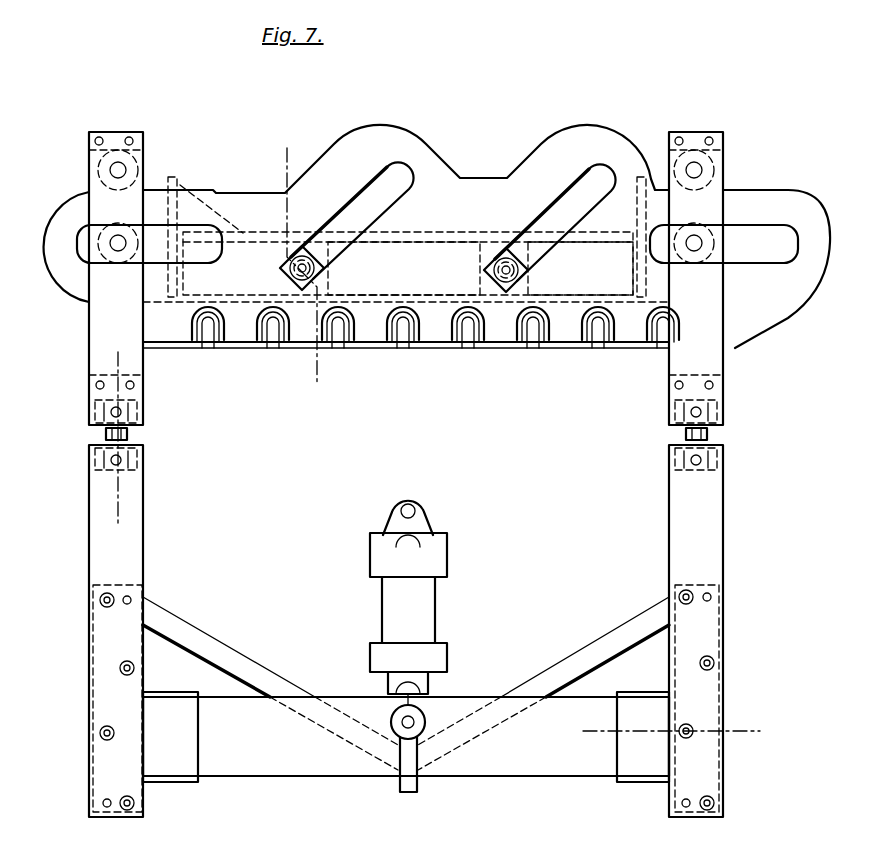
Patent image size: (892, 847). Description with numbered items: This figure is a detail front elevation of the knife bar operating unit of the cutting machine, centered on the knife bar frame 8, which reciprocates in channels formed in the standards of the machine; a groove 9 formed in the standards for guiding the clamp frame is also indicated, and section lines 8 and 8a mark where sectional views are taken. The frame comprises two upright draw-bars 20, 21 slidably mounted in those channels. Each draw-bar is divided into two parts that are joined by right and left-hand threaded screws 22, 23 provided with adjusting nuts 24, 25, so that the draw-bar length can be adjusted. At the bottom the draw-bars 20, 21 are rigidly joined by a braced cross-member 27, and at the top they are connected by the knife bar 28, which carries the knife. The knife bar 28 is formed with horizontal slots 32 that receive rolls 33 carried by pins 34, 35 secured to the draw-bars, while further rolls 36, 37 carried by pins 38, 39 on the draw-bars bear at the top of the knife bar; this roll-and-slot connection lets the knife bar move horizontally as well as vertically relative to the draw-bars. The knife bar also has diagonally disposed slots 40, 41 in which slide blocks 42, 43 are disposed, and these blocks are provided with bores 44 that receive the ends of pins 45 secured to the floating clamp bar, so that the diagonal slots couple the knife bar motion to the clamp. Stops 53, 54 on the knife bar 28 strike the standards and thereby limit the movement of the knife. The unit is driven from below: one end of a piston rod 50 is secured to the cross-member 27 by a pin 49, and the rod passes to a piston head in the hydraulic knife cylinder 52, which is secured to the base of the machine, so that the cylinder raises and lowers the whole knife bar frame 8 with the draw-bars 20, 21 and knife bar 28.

The knife bar frame 8 is at (790, 474).
The section line 8a- 8a is at (300, 170).
The groove 9 is at (668, 733).
The draw-bar 20 is at (100, 515).
The draw-bar 21 is at (712, 527).
The right and left-hand threaded screw 22 is at (143, 406).
The right and left-hand threaded screw 23 is at (143, 461).
The adjusting nut 24 is at (106, 433).
The adjusting nut 25 is at (707, 433).
The braced cross-member 27 is at (527, 770).
The knife bar 28 is at (425, 140).
The horizontal slot 32 is at (150, 268).
The roll 33 is at (113, 258).
The pin 34 is at (112, 243).
The pin 35 is at (698, 240).
The roll 36 is at (140, 166).
The roll 37 is at (705, 165).
The pin 38 is at (120, 168).
The pin 39 is at (695, 168).
The diagonally disposed slot 40 is at (367, 190).
The diagonally disposed slot 41 is at (575, 200).
The slide block 42 is at (404, 268).
The slide block 43 is at (580, 268).
The bore 44 is at (302, 290).
The pin 45 is at (302, 256).
The pin 49 is at (398, 718).
The piston rod 50 is at (432, 693).
The hydraulic cylinder 52 is at (436, 612).
The stop 53 is at (180, 180).
The stop 54 is at (640, 176).